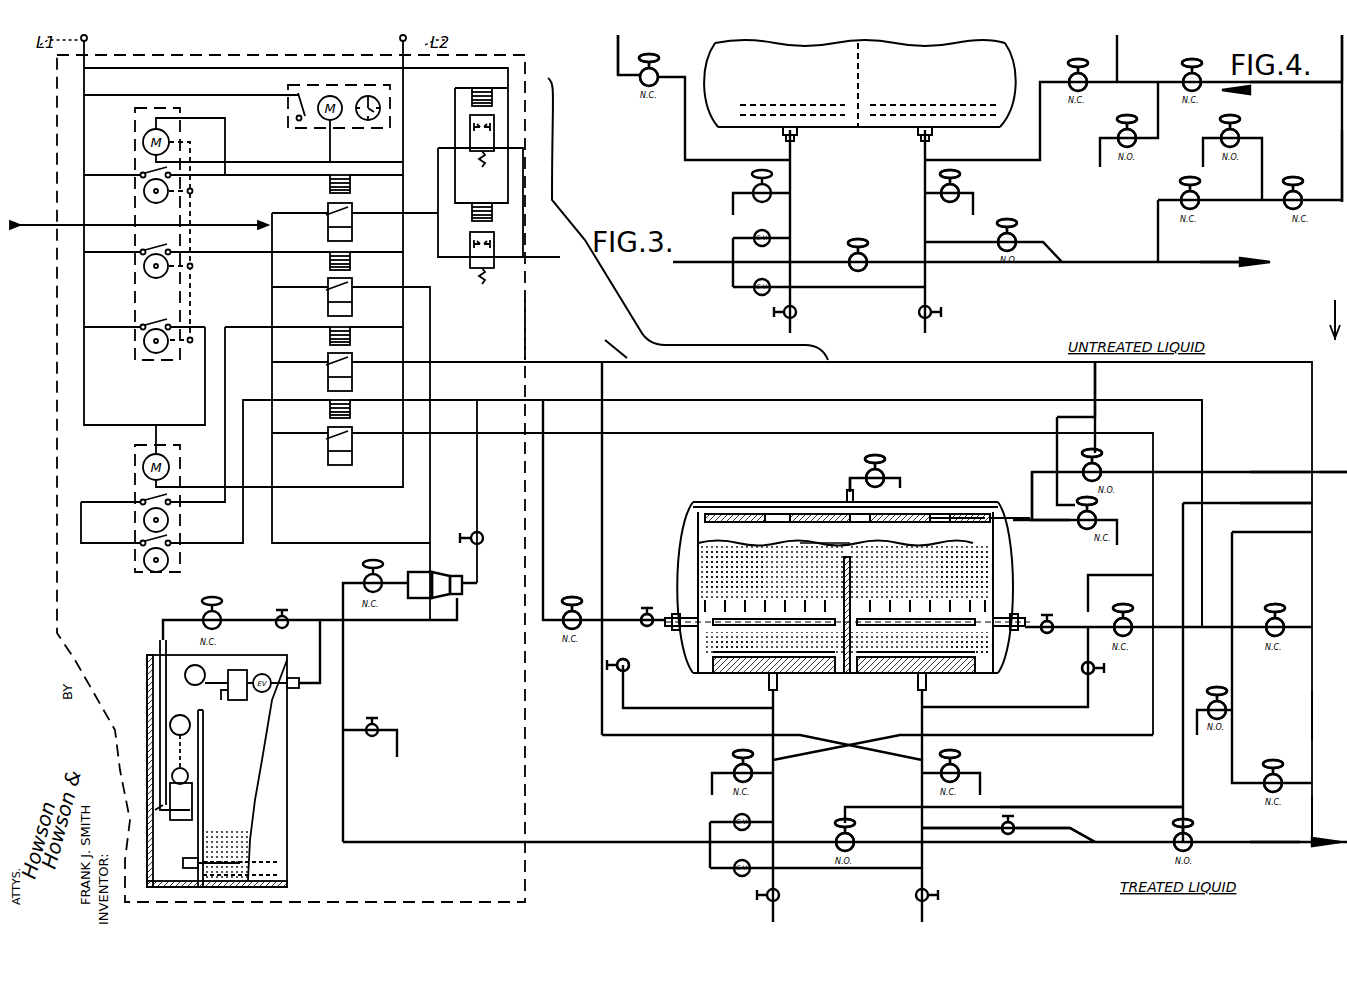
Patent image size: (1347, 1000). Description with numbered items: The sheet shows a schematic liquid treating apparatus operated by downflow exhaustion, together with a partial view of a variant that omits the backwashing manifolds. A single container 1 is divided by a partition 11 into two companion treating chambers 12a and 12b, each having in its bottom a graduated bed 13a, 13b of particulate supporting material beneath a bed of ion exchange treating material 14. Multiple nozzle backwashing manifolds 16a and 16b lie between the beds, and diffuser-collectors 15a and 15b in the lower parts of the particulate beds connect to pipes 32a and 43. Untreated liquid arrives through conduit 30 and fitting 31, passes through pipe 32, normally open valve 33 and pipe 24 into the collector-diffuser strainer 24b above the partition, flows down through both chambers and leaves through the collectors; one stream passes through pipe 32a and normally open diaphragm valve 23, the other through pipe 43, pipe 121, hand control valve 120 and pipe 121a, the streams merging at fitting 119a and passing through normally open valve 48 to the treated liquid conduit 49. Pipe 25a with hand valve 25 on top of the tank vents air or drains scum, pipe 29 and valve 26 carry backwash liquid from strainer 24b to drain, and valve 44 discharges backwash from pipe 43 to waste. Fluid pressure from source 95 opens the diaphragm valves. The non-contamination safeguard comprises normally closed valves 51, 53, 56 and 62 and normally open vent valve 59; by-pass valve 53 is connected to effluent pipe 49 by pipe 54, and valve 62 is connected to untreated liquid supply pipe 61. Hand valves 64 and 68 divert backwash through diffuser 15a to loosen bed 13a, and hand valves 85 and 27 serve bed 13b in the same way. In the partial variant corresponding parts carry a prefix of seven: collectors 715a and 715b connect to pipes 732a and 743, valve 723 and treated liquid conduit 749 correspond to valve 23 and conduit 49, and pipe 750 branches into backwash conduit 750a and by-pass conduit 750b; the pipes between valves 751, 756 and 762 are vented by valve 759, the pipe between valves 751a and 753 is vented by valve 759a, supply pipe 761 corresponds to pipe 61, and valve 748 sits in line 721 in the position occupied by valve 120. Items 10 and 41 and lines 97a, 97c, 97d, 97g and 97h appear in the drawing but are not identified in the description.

In FIG. 3, the container 1 is at (745, 495).
In FIG. 3, the control unit 10 is at (535, 334).
In FIG. 3, the partition 11 is at (855, 575).
In FIG. 3, the treating chamber 12a is at (725, 572).
In FIG. 3, the treating chamber 12b is at (992, 568).
In FIG. 3, the graduated bed of particulate supporting material 13a is at (712, 642).
In FIG. 3, the graduated bed of particulate supporting material 13b is at (985, 645).
In FIG. 3, the bed of ion exchange liquid treating material 14 is at (830, 546).
In FIG. 3, the liquid diffuser and collector 15a is at (774, 629).
In FIG. 3, the liquid diffuser and collector 15b is at (916, 629).
In FIG. 3, the backwashing manifold 16a is at (788, 615).
In FIG. 3, the backwashing manifold 16b is at (935, 615).
In FIG. 3, the normally open diaphragm valve 23 is at (853, 840).
In FIG. 3, the pipe 24 is at (1032, 480).
In FIG. 3, the collector-diffuser strainer 24b is at (945, 512).
In FIG. 3, the hand operated valve 25 is at (884, 473).
In FIG. 3, the pipe 25a is at (850, 480).
In FIG. 3, the valve 26 is at (1098, 515).
In FIG. 3, the hand control valve 27 is at (1082, 673).
In FIG. 3, the pipe 29 is at (1050, 525).
In FIG. 3, the liquid conduit 30 is at (1335, 345).
In FIG. 3, the fitting 31 is at (1342, 468).
In FIG. 3, the untreated liquid conduit 32 is at (1282, 470).
In FIG. 3, the pipe 32a is at (780, 688).
In FIG. 3, the normally open valve 33 is at (1098, 468).
In FIG. 3, the valve 41 is at (735, 768).
In FIG. 3, the pipe 43 is at (915, 688).
In FIG. 3, the valve 44 is at (960, 770).
In FIG. 3, the normally open diaphragm valve 48 is at (1193, 843).
In FIG. 3, the treated liquid conduit 49 is at (1276, 845).
In FIG. 3, the normally closed diaphragm valve 51 is at (1265, 615).
In FIG. 3, the by-pass diaphragm valve 53 is at (1265, 792).
In FIG. 3, the pipe 54 is at (1312, 815).
In FIG. 3, the normally closed diaphragm valve 56 is at (1128, 610).
In FIG. 3, the normally open diaphragm valve 59 is at (1210, 703).
In FIG. 3, the untreated liquid supply pipe 61 is at (1204, 420).
In FIG. 3, the normally closed diaphragm valve 62 is at (565, 632).
In FIG. 3, the hand control valve 64 is at (640, 613).
In FIG. 3, the hand control valve 68 is at (632, 668).
In FIG. 3, the hand control valve 85 is at (1047, 634).
In FIG. 3, the fluid pressure source 95 is at (42, 228).
In FIG. 3, the control line 97a is at (845, 363).
In FIG. 3, the control line 97c is at (1278, 502).
In FIG. 3, the control line 97d is at (1312, 710).
In FIG. 3, the control line 97g is at (1122, 807).
In FIG. 3, the control line 97h is at (1098, 378).
In FIG. 3, the fitting 119a is at (1085, 845).
In FIG. 3, the hand control valve 120 is at (1000, 832).
In FIG. 3, the pipe 121 is at (975, 828).
In FIG. 3, the pipe 121a is at (1035, 828).
In FIG. 4, the liquid diffuser and collector 715a is at (793, 105).
In FIG. 4, the liquid diffuser and collector 715b is at (926, 105).
In FIG. 4, the line 721 is at (950, 205).
In FIG. 4, the normally open diaphragm valve 723 is at (850, 255).
In FIG. 4, the pipe 732a is at (785, 135).
In FIG. 4, the pipe 743 is at (918, 135).
In FIG. 4, the valve 748 is at (1015, 240).
In FIG. 4, the treated liquid conduit 749 is at (1245, 265).
In FIG. 4, the pipe 750 is at (1340, 38).
In FIG. 4, the backwash conduit 750a is at (1272, 85).
In FIG. 4, the by-pass conduit 750b is at (1340, 153).
In FIG. 4, the valve 751 is at (1183, 78).
In FIG. 4, the valve 751a is at (1288, 210).
In FIG. 4, the valve 753 is at (1180, 195).
In FIG. 4, the valve 756 is at (1068, 78).
In FIG. 4, the vent valve 759 is at (1118, 133).
In FIG. 4, the vent valve 759a is at (1240, 135).
In FIG. 4, the untreated liquid supply pipe 761 is at (615, 45).
In FIG. 4, the normally closed diaphragm valve 762 is at (658, 62).